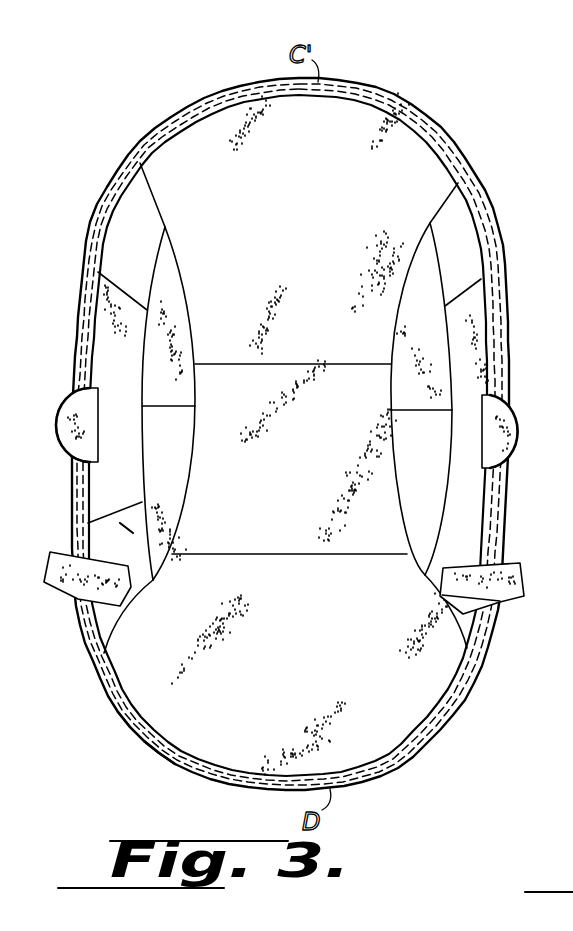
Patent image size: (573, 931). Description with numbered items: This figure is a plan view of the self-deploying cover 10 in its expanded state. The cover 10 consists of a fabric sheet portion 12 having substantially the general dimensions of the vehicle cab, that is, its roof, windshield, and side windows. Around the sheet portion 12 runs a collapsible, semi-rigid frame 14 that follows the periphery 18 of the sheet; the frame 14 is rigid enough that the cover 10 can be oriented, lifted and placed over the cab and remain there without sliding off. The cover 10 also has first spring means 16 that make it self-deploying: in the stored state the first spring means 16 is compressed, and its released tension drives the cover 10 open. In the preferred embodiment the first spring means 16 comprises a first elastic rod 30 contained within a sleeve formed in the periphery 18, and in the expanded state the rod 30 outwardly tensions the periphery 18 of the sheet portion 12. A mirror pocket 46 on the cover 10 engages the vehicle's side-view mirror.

The self-deploying cover 10 is at (497, 140).
The fabric sheet portion 12 is at (360, 137).
The collapsible semi-rigid frame 14 is at (500, 221).
The first spring means 16 is at (163, 114).
The periphery 18 is at (508, 374).
The first elastic rod 30 is at (158, 764).
The mirror pocket 46 is at (520, 565).